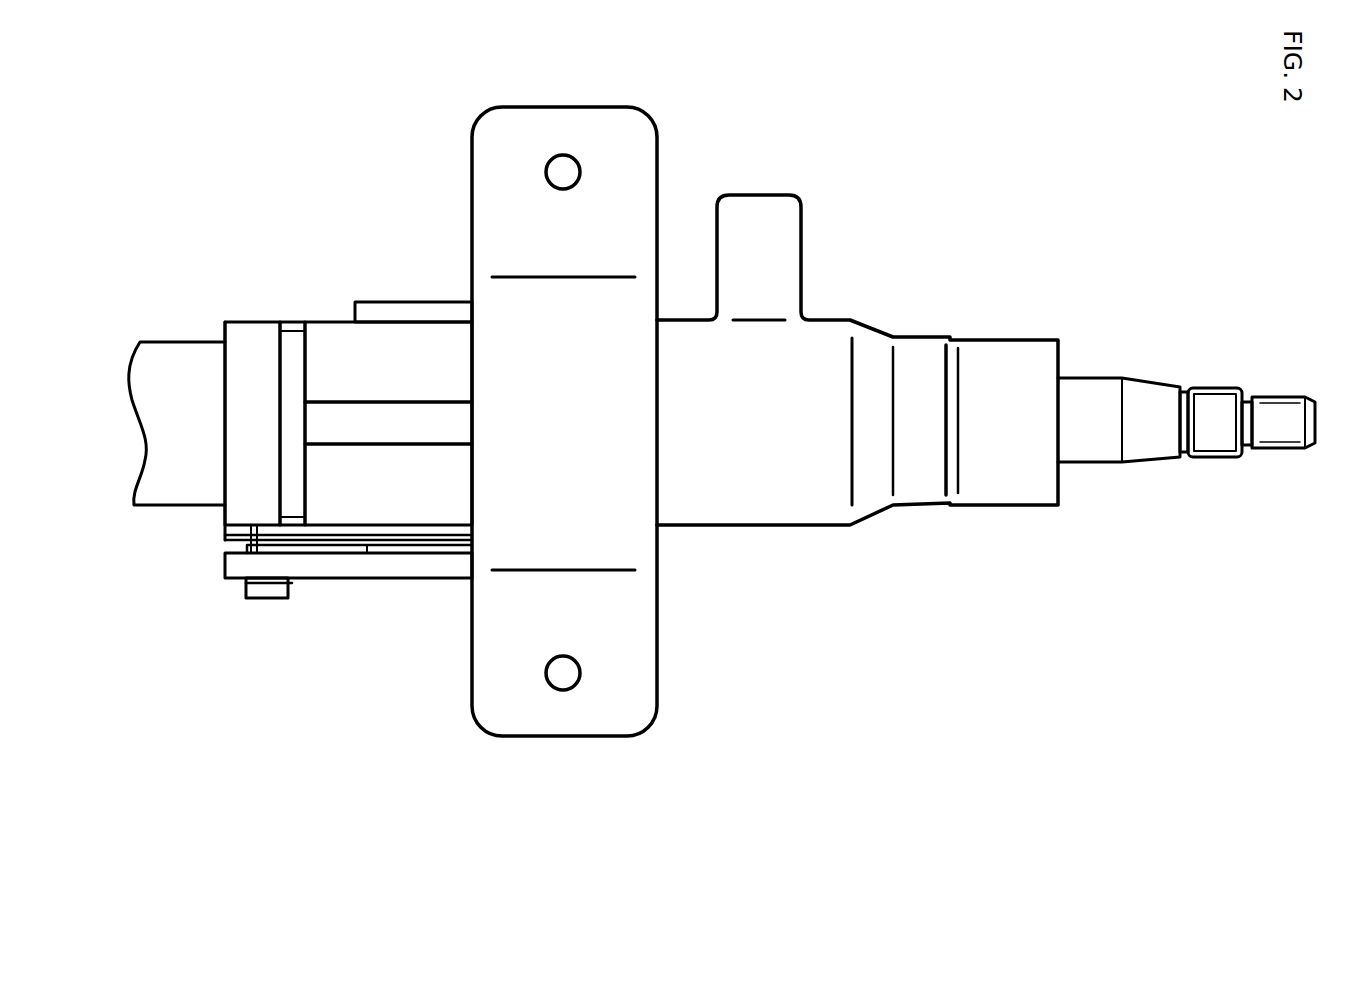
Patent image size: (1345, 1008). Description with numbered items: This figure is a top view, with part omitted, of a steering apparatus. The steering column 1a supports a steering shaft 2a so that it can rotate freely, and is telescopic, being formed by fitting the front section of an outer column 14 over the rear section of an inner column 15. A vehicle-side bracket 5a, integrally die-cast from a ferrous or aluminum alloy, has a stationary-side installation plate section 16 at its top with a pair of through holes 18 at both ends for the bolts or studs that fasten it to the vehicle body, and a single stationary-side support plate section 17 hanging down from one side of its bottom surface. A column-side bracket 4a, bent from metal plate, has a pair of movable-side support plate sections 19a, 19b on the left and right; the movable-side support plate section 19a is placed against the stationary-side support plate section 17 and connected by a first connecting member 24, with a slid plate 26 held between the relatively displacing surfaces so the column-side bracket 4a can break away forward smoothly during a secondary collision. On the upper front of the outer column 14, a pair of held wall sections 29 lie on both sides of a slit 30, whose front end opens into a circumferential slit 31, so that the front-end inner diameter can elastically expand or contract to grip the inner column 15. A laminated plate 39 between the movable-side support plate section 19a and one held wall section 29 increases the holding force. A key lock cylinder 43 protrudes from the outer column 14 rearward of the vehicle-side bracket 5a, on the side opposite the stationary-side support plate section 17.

The steering column 1a is at (755, 501).
The steering shaft 2a is at (1140, 393).
The column-side bracket 4a is at (437, 549).
The vehicle-side bracket 5a is at (626, 148).
The outer column 14 is at (873, 493).
The inner column 15 is at (175, 356).
The stationary-side installation plate section 16 is at (496, 297).
The stationary-side support plate section 17 is at (415, 570).
The through holes 18 is at (571, 160).
The movable-side support plate section 19a is at (377, 547).
The movable-side support plate section 19b is at (371, 310).
The first connecting member 24 is at (263, 593).
The slid plate 26 is at (244, 580).
The held wall sections 29 is at (337, 329).
The slit 30 is at (422, 410).
The slit 31 is at (284, 450).
The laminated plate 39 is at (353, 538).
The key lock cylinder 43 is at (758, 202).